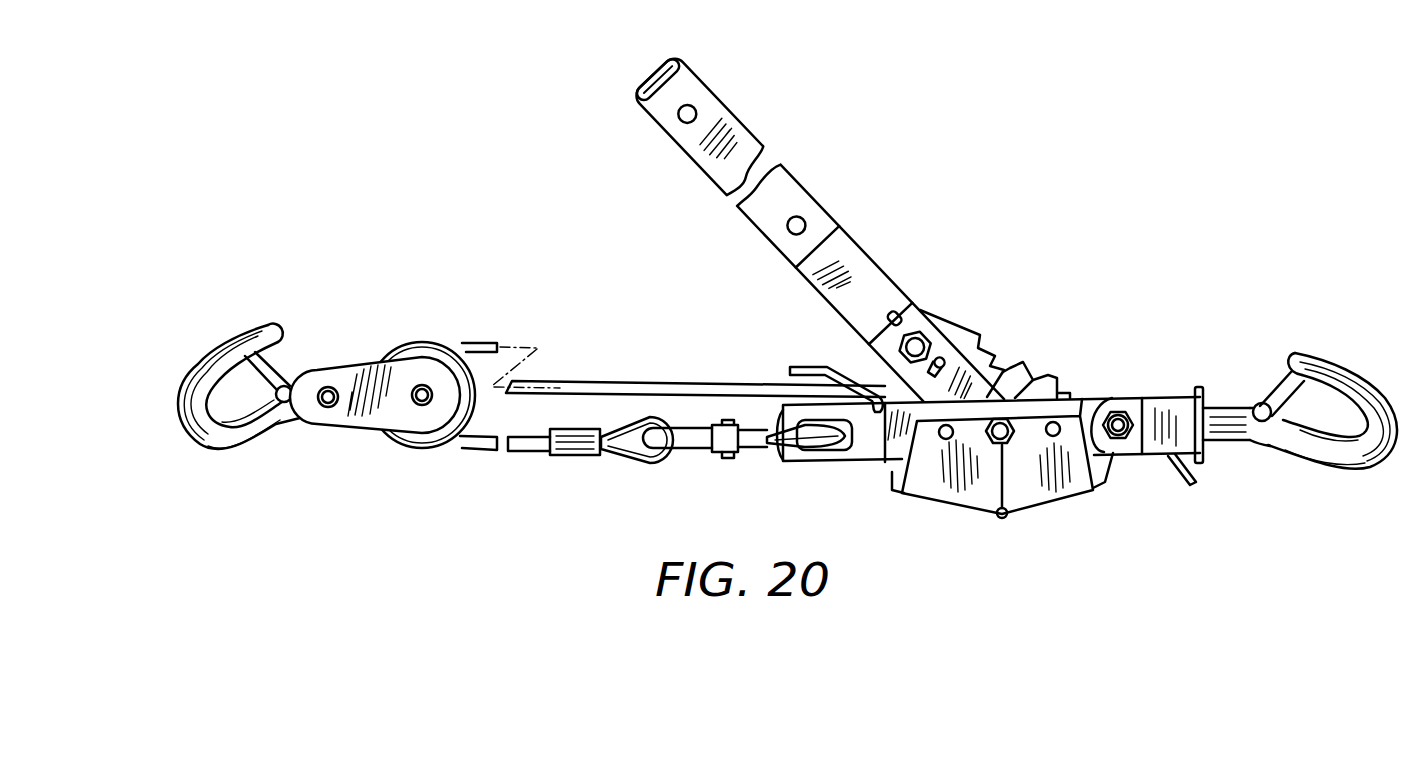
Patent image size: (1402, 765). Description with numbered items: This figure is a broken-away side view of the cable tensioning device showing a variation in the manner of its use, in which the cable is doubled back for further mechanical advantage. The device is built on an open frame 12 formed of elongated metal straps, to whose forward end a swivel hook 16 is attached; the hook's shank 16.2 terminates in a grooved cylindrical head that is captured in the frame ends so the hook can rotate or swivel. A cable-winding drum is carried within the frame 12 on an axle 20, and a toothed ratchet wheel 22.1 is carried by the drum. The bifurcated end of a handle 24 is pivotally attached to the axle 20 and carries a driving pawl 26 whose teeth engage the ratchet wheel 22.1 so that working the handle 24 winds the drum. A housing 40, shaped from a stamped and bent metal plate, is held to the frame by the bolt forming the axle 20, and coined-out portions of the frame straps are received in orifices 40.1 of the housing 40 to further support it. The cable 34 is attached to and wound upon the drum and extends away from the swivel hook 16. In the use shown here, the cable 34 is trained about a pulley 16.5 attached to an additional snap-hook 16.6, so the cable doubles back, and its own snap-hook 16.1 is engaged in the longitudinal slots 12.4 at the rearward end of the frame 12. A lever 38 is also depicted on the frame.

The frame 12 is at (1107, 393).
The longitudinal slots 12.4 is at (838, 458).
The swivel hook 16 is at (1335, 356).
The snap-hook 16.1 is at (798, 452).
The shank 16.2 is at (1220, 418).
The pulley 16.5 is at (420, 440).
The additional snap-hook 16.6 is at (240, 327).
The axle 20 is at (1010, 418).
The toothed ratchet wheel 22.1 is at (1004, 364).
The handle 24 is at (797, 162).
The driving pawl 26 is at (961, 319).
The cable 34 is at (628, 342).
The release lever 38 is at (812, 367).
The housing 40 is at (1026, 517).
The orifices 40.1 is at (945, 442).